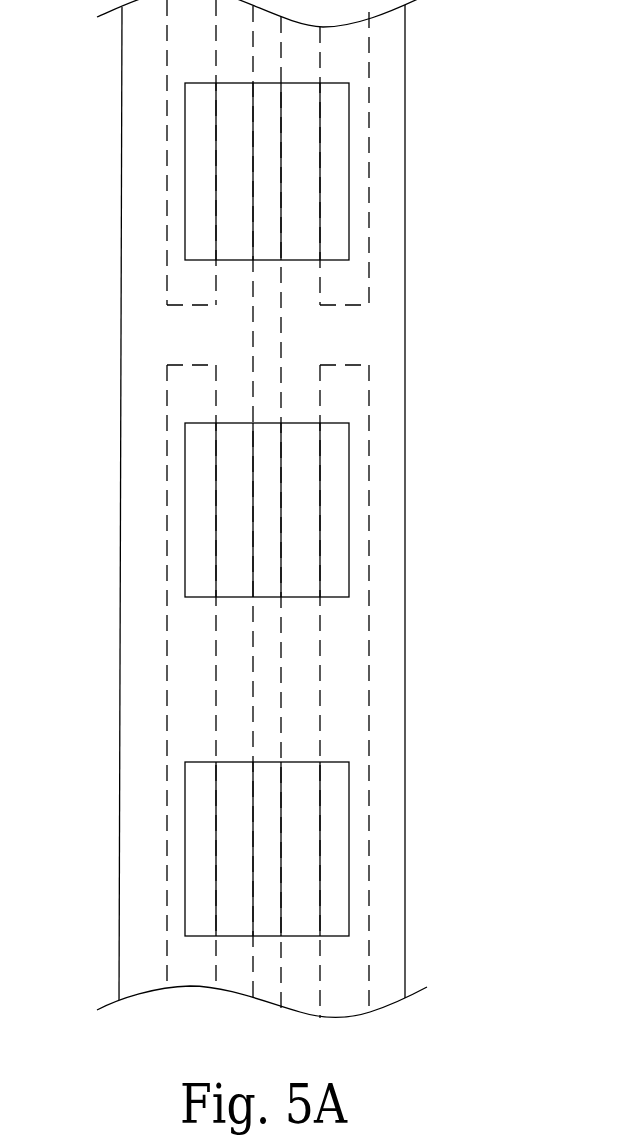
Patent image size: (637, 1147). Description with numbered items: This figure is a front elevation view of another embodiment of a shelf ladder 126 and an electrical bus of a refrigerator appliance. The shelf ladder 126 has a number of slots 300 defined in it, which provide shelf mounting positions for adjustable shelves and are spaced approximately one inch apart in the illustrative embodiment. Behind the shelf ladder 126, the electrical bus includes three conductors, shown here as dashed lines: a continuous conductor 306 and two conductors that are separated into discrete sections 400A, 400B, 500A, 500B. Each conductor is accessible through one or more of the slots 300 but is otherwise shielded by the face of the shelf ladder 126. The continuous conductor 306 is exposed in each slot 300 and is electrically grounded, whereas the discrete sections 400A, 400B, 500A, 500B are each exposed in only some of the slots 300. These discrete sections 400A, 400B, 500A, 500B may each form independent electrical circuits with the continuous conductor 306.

The shelf ladder 126 is at (145, 664).
The slot 300 is at (350, 220).
The continuous conductor 306 is at (267, 988).
The discrete section of conductor 400A is at (198, 148).
The discrete section of conductor 400B is at (198, 475).
The discrete section of conductor 500A is at (337, 149).
The discrete section of conductor 500B is at (337, 476).